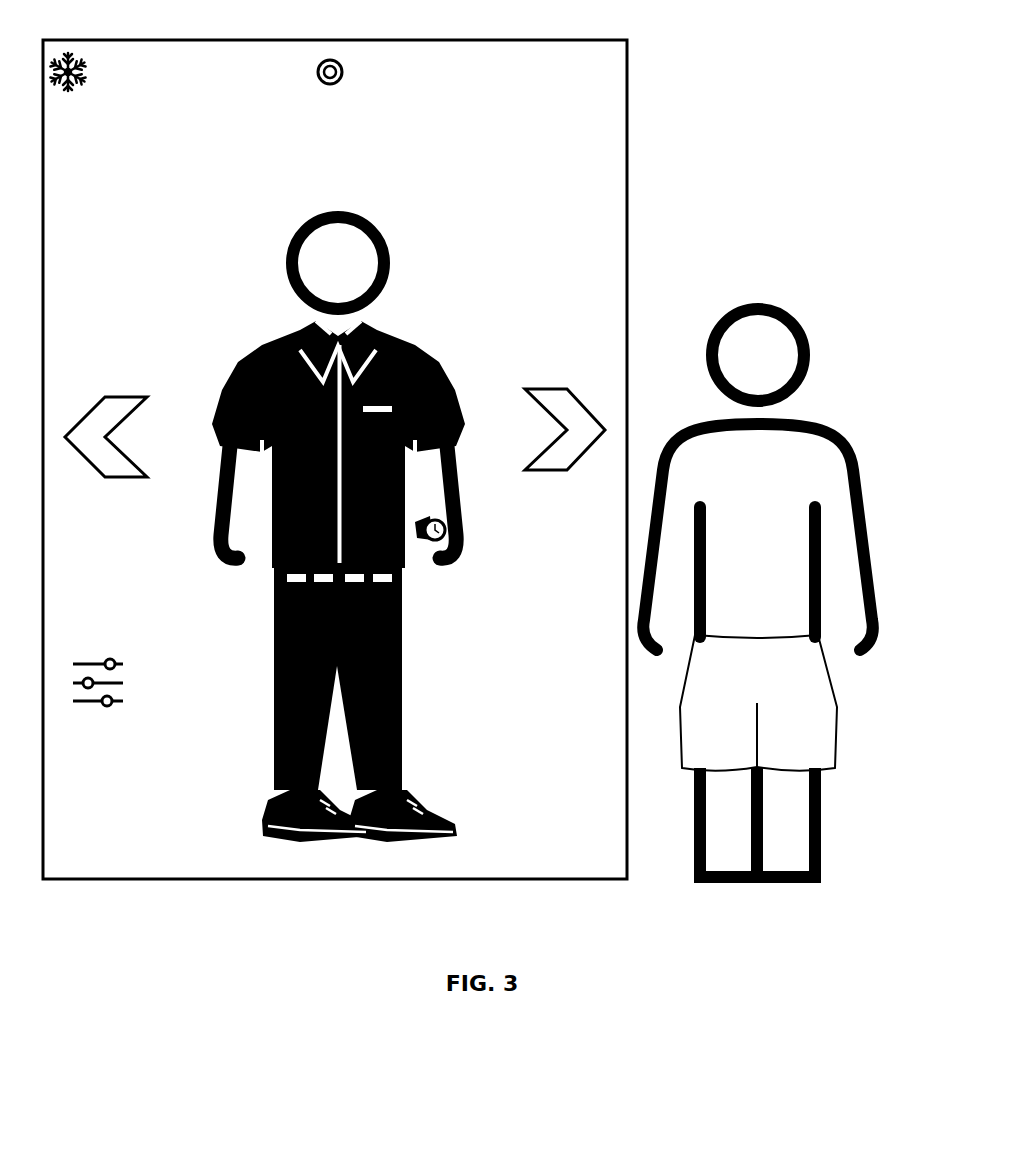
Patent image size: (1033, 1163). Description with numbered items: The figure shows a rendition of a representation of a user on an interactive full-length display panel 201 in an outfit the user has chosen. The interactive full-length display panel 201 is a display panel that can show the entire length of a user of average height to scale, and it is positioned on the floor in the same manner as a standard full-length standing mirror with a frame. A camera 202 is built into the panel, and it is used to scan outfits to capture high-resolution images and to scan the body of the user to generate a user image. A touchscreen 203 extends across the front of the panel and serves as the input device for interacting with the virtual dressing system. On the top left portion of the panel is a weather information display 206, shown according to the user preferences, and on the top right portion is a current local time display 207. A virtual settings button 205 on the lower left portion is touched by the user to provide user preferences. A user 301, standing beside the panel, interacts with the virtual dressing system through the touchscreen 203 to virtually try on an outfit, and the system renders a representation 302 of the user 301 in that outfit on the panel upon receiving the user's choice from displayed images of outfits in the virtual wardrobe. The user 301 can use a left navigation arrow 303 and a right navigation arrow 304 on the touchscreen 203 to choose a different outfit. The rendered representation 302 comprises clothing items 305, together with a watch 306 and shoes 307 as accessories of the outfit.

The interactive full-length display panel 201 is at (630, 100).
The camera 202 is at (335, 62).
The touchscreen 203 is at (578, 245).
The virtual settings button 205 is at (88, 648).
The weather information display 206 is at (85, 57).
The current local time display 207 is at (545, 55).
The user 301 is at (745, 302).
The representation 302 is at (398, 262).
The left navigation arrow 303 is at (107, 395).
The right navigation arrow 304 is at (588, 403).
The clothing items 305 is at (432, 363).
The watch 306 is at (462, 517).
The shoes 307 is at (420, 795).